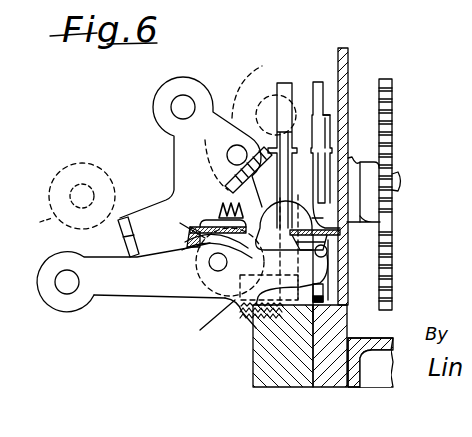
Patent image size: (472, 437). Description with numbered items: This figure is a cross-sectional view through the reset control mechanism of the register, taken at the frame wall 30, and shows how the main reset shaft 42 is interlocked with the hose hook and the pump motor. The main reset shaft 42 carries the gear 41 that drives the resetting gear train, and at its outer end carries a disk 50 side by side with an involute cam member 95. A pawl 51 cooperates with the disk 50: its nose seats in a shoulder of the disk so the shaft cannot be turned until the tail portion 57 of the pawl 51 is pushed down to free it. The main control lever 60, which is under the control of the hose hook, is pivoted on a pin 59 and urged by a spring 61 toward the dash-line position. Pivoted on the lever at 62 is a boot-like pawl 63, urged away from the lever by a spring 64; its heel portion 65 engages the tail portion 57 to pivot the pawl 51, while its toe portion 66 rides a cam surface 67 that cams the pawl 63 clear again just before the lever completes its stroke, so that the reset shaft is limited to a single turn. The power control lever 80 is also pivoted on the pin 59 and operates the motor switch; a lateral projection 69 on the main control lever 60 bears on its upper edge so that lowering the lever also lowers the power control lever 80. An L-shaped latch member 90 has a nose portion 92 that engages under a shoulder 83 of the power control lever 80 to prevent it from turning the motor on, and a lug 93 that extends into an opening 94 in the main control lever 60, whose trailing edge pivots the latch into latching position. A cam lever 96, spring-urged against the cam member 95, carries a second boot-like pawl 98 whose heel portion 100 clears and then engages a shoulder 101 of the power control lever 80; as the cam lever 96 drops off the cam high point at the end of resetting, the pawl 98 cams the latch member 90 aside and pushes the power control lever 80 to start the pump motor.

The wall / frame plate 30 is at (344, 50).
The gear 41 is at (388, 100).
The main reset shaft 42 is at (397, 175).
The disk 50 is at (282, 96).
The pawl 51 is at (283, 88).
The tail portion 57 is at (344, 254).
The pin 59 is at (182, 295).
The main control lever 60 is at (207, 83).
The spring 61 is at (262, 340).
The pivot 62 is at (228, 150).
The boot-like pawl 63 is at (222, 190).
The spring 64 is at (222, 208).
The heel portion 65 is at (344, 237).
The toe portion 66 is at (250, 300).
The cam surface 67 is at (210, 303).
The lateral projection 69 is at (121, 216).
The power control lever 80 is at (47, 262).
The shoulder 83 is at (288, 203).
The L-shaped latch member 90 is at (178, 261).
The nose portion 92 is at (392, 224).
The lug 93 is at (190, 230).
The opening 94 is at (182, 233).
The involute cam member 95 is at (310, 114).
The cam lever 96 is at (327, 113).
The boot-like pawl 98 is at (343, 165).
The heel portion 100 is at (330, 296).
The shoulder 101 is at (330, 262).